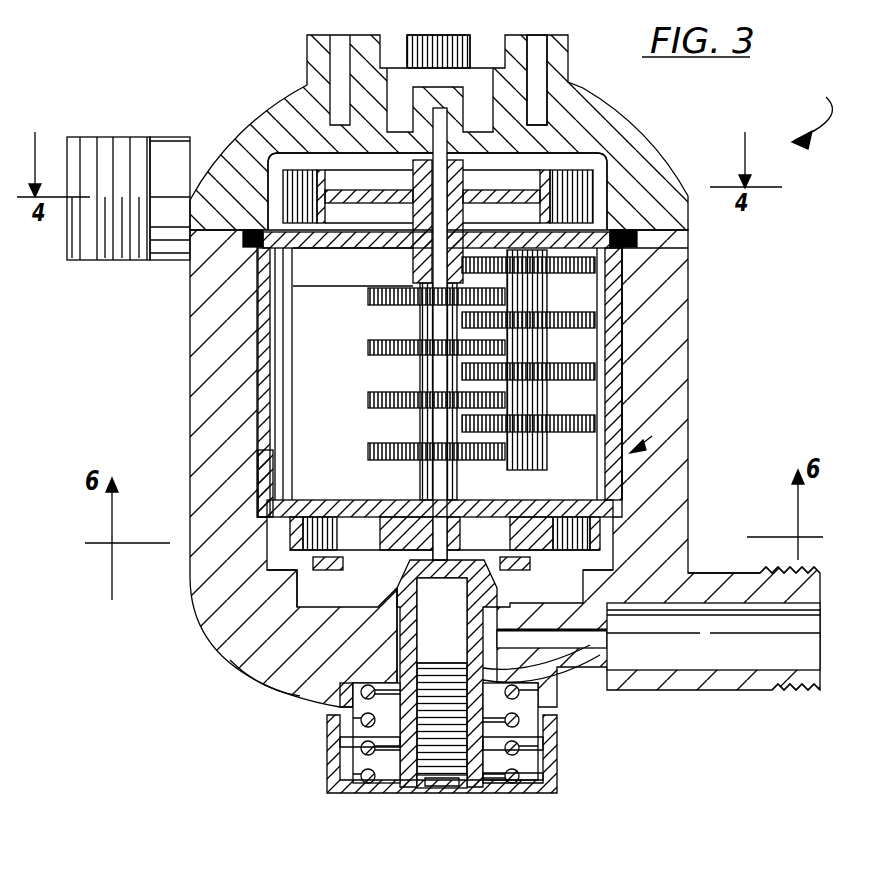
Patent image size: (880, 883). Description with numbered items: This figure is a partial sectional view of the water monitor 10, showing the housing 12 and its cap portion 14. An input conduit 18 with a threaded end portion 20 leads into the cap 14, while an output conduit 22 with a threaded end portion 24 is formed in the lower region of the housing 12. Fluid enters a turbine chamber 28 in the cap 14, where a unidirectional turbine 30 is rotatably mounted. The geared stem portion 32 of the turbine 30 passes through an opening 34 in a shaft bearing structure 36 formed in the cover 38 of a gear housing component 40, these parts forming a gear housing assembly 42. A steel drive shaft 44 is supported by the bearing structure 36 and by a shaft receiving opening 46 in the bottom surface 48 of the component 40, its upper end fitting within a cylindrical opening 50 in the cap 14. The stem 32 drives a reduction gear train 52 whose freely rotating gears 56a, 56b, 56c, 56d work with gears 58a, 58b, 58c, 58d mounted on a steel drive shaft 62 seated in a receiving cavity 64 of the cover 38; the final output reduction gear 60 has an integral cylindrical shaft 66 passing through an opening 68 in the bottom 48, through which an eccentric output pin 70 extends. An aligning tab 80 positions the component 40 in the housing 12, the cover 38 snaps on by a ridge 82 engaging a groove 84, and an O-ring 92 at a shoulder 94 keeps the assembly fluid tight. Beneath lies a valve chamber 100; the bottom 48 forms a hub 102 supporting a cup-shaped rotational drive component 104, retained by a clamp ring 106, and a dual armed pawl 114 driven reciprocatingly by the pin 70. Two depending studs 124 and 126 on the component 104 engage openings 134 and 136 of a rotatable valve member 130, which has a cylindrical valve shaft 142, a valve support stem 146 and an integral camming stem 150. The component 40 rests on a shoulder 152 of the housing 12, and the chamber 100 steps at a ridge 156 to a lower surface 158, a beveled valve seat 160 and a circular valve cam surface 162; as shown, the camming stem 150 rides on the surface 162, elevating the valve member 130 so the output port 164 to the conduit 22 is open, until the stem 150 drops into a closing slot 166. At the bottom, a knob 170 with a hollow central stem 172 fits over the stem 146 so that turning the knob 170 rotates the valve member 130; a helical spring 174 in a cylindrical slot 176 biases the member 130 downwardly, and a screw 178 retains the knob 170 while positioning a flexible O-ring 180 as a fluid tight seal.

The monitor 10 is at (812, 116).
The housing 12 is at (678, 336).
The cap portion 14 is at (612, 130).
The input conduit 18 is at (173, 148).
The threaded end portion 20 is at (124, 147).
The output conduit 22 is at (690, 690).
The threaded end portion 24 is at (775, 690).
The turbine chamber 28 is at (330, 165).
The turbine 30 is at (300, 185).
The geared lower shaft or stem portion 32 is at (410, 272).
The opening 34 is at (463, 216).
The shaft bearing structure 36 is at (408, 257).
The cover 38 is at (603, 228).
The gear housing component 40 is at (615, 380).
The gear housing assembly 42 is at (667, 435).
The drive shaft 44 is at (593, 103).
The shaft receiving opening 46 is at (430, 515).
The bottom surface 48 is at (310, 512).
The cylindrical opening 50 is at (398, 130).
The reduction gear train 52 is at (510, 334).
The freely rotating gear 56a is at (368, 302).
The freely rotating gear 56b is at (368, 347).
The freely rotating gear 56c is at (368, 400).
The freely rotating gear 56d is at (368, 450).
The gear 58a is at (550, 283).
The gear 58b is at (548, 333).
The gear 58c is at (548, 386).
The gear 58d is at (548, 438).
The output reduction gear 60 is at (600, 472).
The drive shaft 62 is at (622, 278).
The receiving cavity 64 is at (553, 187).
The cylindrical shaft 66 is at (600, 495).
The opening 68 is at (580, 512).
The eccentric output pin 70 is at (585, 530).
The aligning tab 80 is at (590, 548).
The ridge 82 is at (620, 320).
The groove 84 is at (265, 280).
The O-ring 92 is at (640, 236).
The shoulder 94 is at (610, 244).
The valve chamber 100 is at (297, 612).
The hub 102 is at (442, 620).
The rotational drive component 104 is at (275, 538).
The clamp ring 106 is at (383, 612).
The dual armed pawl 114 is at (388, 522).
The stud 124 is at (528, 588).
The stud 126 is at (347, 585).
The rotatable valve member 130 is at (340, 706).
The opening 134 is at (690, 565).
The opening 136 is at (292, 558).
The cylindrical valve shaft 142 is at (340, 672).
The valve support stem 146 is at (420, 742).
The camming stem 150 is at (478, 632).
The shoulder 152 is at (265, 520).
The ridge 156 is at (283, 575).
The lower surface 158 is at (375, 608).
The beveled valve seat 160 is at (478, 610).
The circular valve cam surface 162 is at (340, 712).
The output port 164 is at (597, 660).
The closing slot 166 is at (537, 688).
The knob 170 is at (543, 795).
The hollow central stem 172 is at (490, 775).
The helical spring 174 is at (507, 775).
The cylindrically shaped slot 176 is at (338, 750).
The screw 178 is at (443, 790).
The O-ring 180 is at (538, 707).